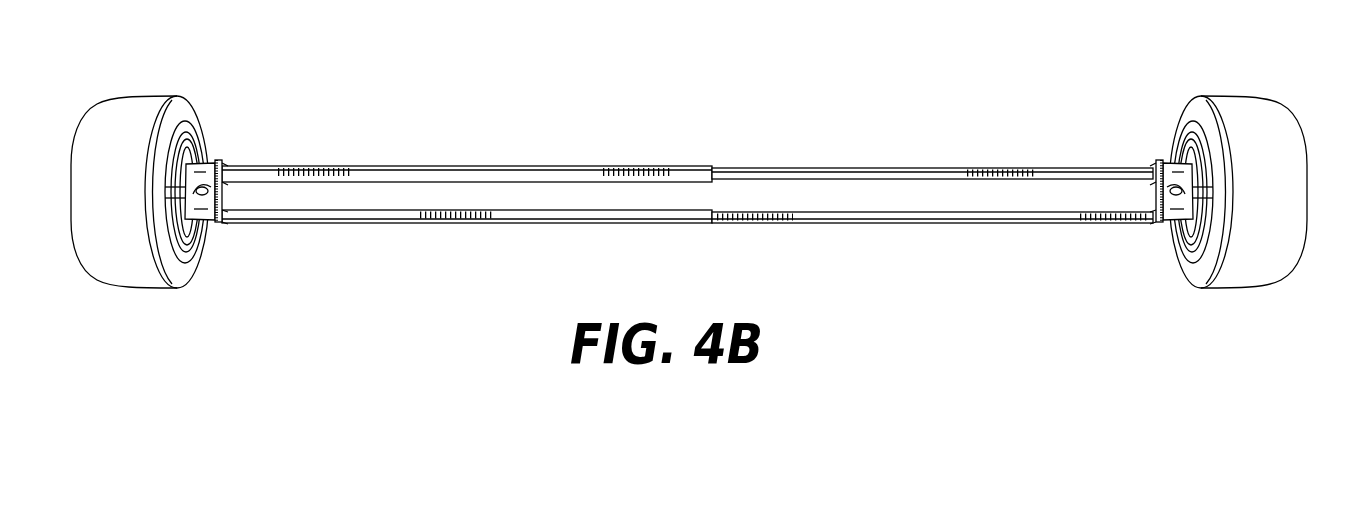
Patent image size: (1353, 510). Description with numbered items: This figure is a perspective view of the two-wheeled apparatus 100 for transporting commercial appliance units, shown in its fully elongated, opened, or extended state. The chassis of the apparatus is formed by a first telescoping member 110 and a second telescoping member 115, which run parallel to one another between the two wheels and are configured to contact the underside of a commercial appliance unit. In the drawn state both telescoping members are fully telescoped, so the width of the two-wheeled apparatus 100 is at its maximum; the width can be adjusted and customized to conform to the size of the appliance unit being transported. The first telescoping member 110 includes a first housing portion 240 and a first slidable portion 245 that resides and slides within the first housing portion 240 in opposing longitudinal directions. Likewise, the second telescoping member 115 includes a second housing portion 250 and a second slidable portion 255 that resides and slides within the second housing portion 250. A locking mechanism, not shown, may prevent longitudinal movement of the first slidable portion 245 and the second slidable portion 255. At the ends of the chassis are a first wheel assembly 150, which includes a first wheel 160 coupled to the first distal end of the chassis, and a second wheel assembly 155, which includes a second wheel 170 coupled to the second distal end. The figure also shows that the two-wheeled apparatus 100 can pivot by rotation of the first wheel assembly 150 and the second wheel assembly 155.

The two-wheeled apparatus 100 is at (689, 211).
The first telescoping member 110 is at (687, 138).
The second telescoping member 115 is at (687, 254).
The first wheel assembly 150 is at (240, 136).
The second wheel assembly 155 is at (1140, 144).
The first wheel 160 is at (143, 94).
The second wheel 170 is at (1237, 95).
The first housing portion 240 is at (466, 165).
The first slidable portion 245 is at (890, 166).
The second housing portion 250 is at (466, 224).
The second slidable portion 255 is at (890, 224).